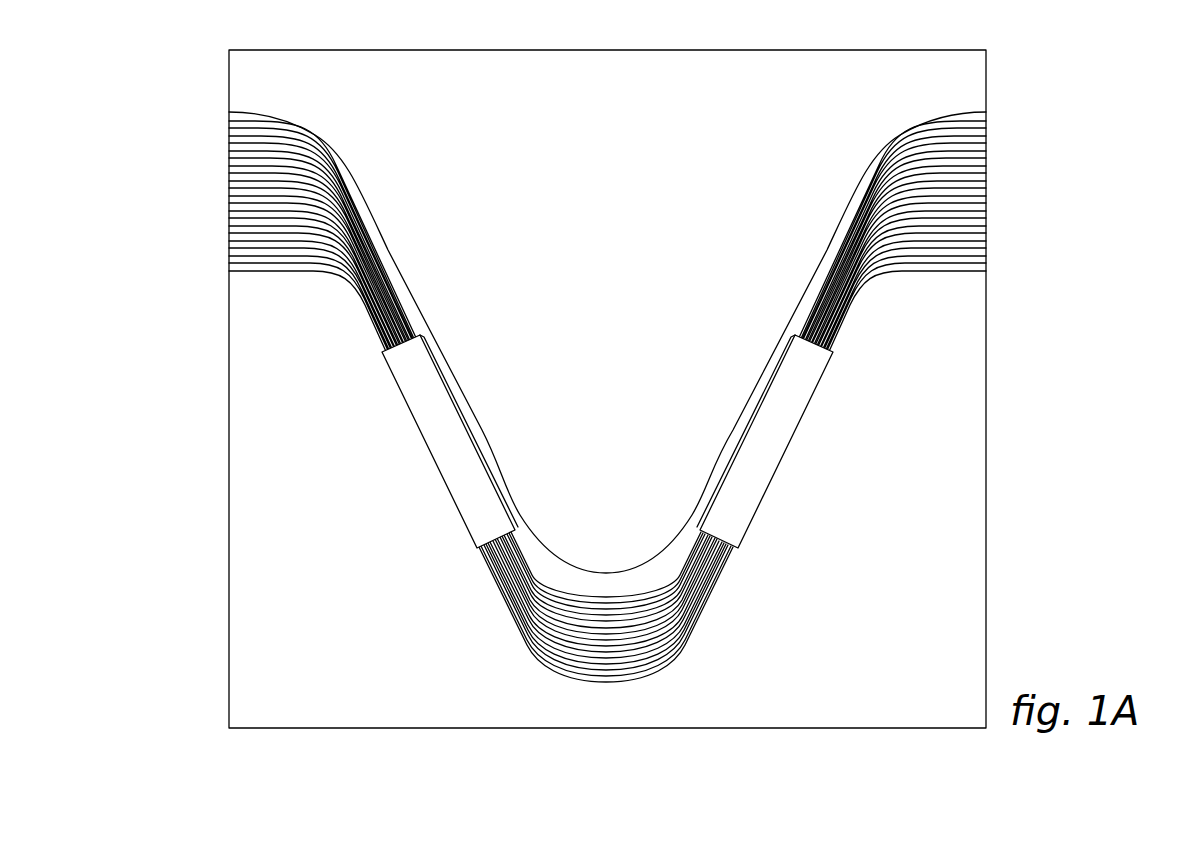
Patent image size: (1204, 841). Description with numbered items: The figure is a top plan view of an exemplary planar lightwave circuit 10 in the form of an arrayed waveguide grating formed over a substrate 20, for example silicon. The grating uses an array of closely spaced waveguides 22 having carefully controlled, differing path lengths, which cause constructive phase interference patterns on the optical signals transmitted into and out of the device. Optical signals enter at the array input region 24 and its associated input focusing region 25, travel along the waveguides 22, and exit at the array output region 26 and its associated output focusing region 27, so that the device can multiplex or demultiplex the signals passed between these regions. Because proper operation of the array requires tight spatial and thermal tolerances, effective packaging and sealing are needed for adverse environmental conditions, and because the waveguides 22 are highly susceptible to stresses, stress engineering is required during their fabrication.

The planar lightwave circuit 10 is at (1112, 108).
The substrate 20 is at (630, 208).
The waveguides 22 is at (700, 622).
The array input region 24 is at (208, 107).
The input focusing region 25 is at (422, 442).
The array output region 26 is at (1007, 107).
The output focusing region 27 is at (790, 443).